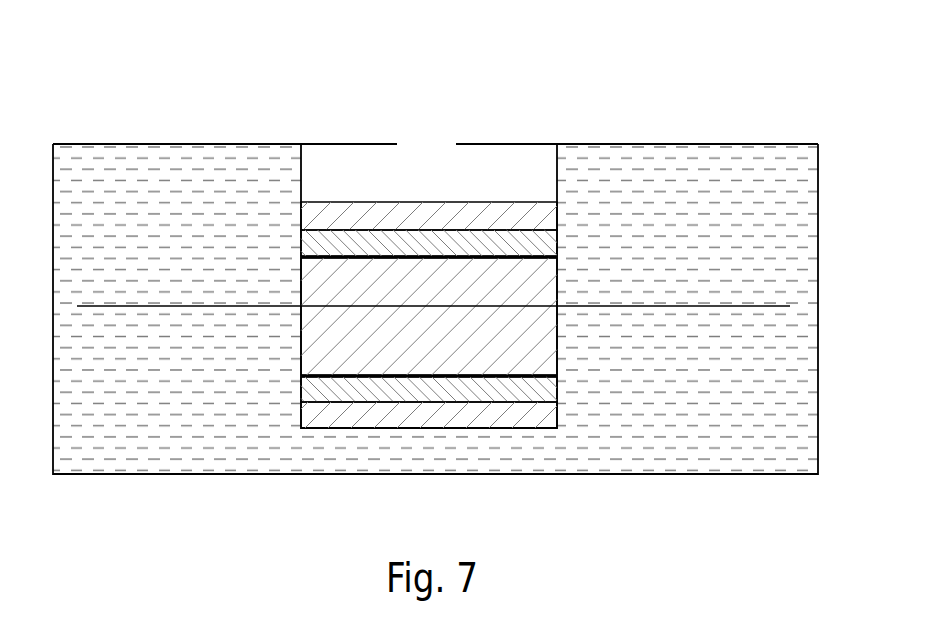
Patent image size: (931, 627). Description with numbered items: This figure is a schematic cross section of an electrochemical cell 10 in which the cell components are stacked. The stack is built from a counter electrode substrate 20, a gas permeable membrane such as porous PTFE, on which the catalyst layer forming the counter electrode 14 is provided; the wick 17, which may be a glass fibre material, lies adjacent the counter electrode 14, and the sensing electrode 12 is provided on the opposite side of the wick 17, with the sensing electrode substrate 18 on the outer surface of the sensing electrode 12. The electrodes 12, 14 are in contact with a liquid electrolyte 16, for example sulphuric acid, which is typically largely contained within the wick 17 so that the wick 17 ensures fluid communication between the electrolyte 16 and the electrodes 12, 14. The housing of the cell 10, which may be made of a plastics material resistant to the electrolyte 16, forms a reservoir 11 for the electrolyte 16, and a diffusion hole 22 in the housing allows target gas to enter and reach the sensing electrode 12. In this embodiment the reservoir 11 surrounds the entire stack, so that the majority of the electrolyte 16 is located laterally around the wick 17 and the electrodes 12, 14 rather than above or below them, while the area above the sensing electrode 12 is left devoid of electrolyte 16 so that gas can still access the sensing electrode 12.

The electrochemical cell 10 is at (260, 136).
The reservoir 11 is at (697, 147).
The sensing electrode 12 is at (557, 244).
The counter electrode 14 is at (300, 391).
The electrolyte 16 is at (688, 445).
The wick 17 is at (310, 335).
The sensing electrode substrate 18 is at (300, 216).
The counter electrode substrate 20 is at (168, 306).
The diffusion hole 22 is at (455, 144).